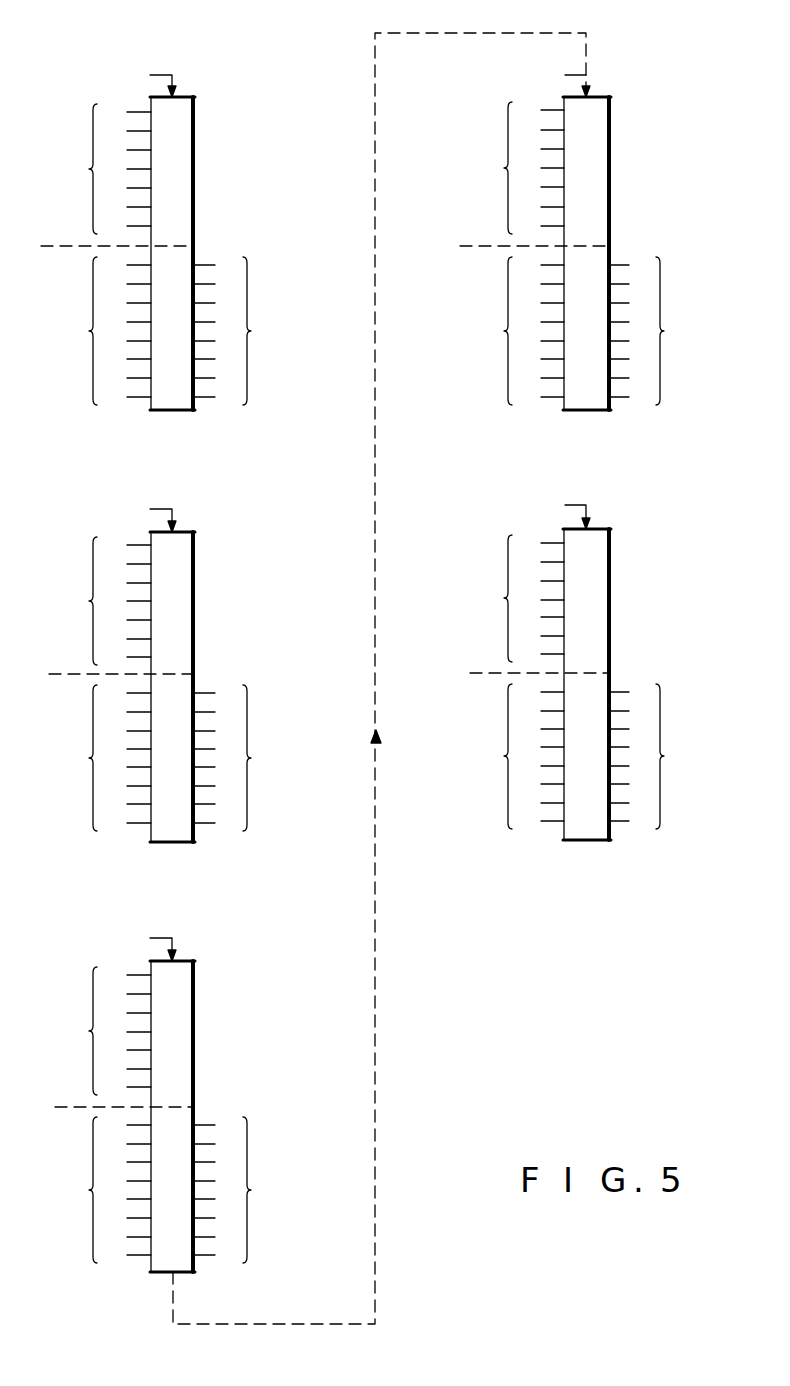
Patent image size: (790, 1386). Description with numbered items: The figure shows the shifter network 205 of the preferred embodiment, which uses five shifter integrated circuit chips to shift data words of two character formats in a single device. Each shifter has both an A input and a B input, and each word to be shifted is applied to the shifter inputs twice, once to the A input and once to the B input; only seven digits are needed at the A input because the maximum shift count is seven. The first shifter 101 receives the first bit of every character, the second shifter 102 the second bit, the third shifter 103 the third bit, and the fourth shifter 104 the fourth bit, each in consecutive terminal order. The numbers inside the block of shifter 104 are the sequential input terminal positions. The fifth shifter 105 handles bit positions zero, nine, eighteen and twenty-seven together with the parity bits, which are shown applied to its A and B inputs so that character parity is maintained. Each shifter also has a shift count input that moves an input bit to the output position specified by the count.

The first shifter 101 is at (193, 177).
The second shifter 102 is at (193, 610).
The third shifter 103 is at (193, 1043).
The fourth shifter 104 is at (609, 173).
The fifth shifter 105 is at (609, 606).
The shifter network 205 is at (298, 68).